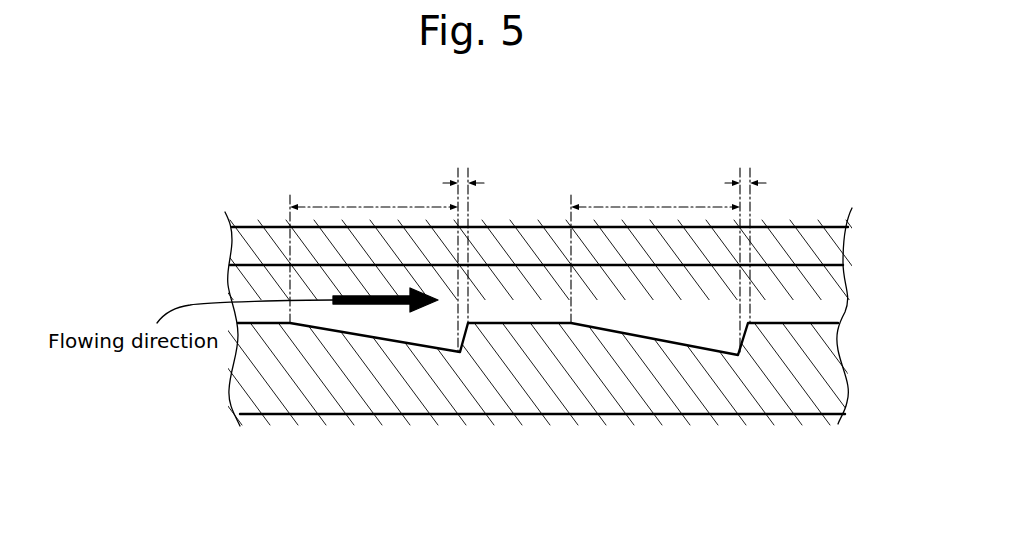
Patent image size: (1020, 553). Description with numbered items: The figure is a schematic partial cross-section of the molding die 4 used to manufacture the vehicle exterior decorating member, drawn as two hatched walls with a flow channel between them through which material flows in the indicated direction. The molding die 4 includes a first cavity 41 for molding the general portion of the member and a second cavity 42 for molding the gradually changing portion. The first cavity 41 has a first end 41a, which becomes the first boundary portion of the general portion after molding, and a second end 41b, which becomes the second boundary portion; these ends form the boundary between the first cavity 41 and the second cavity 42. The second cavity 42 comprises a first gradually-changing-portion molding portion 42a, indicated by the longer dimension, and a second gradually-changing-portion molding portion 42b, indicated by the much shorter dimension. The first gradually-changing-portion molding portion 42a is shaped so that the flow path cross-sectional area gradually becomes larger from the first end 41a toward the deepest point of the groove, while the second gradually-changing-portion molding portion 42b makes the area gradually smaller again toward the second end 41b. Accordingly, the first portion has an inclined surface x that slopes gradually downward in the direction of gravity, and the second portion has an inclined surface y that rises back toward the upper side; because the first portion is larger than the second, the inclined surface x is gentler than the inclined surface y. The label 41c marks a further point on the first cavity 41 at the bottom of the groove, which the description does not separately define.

The molding die 4 is at (825, 378).
The first cavity 41 is at (248, 278).
The first end 41a is at (285, 319).
The second end 41b is at (503, 325).
The groove bottom 41c is at (452, 347).
The second cavity 42 is at (322, 284).
The first gradually-changing-portion molding portion 42a is at (367, 207).
The second gradually-changing-portion molding portion 42b is at (465, 183).
The inclined surface x is at (354, 327).
The inclined surface y is at (465, 324).